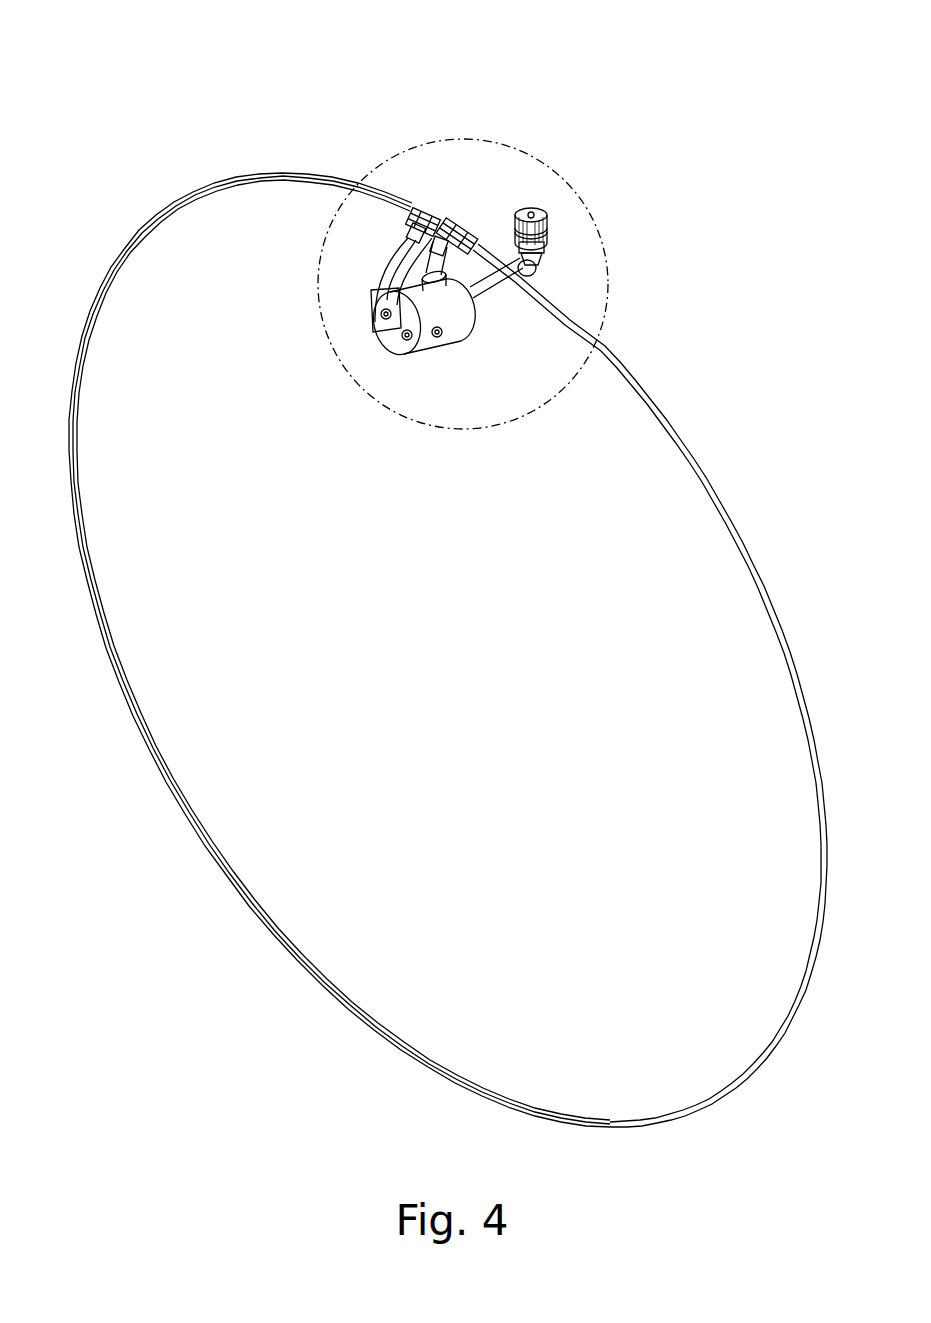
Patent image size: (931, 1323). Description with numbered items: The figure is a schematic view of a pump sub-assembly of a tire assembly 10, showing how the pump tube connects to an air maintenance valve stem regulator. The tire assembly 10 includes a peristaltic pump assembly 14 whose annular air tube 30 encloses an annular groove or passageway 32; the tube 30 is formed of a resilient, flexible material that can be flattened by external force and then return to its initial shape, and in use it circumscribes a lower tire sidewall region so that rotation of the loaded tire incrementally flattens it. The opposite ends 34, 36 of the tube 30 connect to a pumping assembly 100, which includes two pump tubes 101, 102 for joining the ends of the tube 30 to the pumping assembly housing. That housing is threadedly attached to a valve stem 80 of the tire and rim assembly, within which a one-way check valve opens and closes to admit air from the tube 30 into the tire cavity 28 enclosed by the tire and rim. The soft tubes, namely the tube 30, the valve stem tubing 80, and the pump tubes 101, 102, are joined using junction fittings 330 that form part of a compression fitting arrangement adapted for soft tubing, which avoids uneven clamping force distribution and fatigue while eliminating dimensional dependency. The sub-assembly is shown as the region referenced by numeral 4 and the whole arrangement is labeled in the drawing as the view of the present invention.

The detail region of tube assembly 4 is at (428, 429).
The tire assembly 10 is at (772, 181).
The peristaltic pump assembly 14 is at (641, 306).
The tire cavity 28 is at (678, 232).
The annular air tube 30 is at (143, 228).
The annular groove or passageway 32 is at (697, 446).
The tube end 34 is at (402, 203).
The tube end 36 is at (487, 247).
The valve stem 80 is at (503, 290).
The pumping assembly 100 is at (377, 357).
The pump tube 101 is at (375, 265).
The pump tube 102 is at (450, 338).
The junction fittings 330 is at (457, 222).